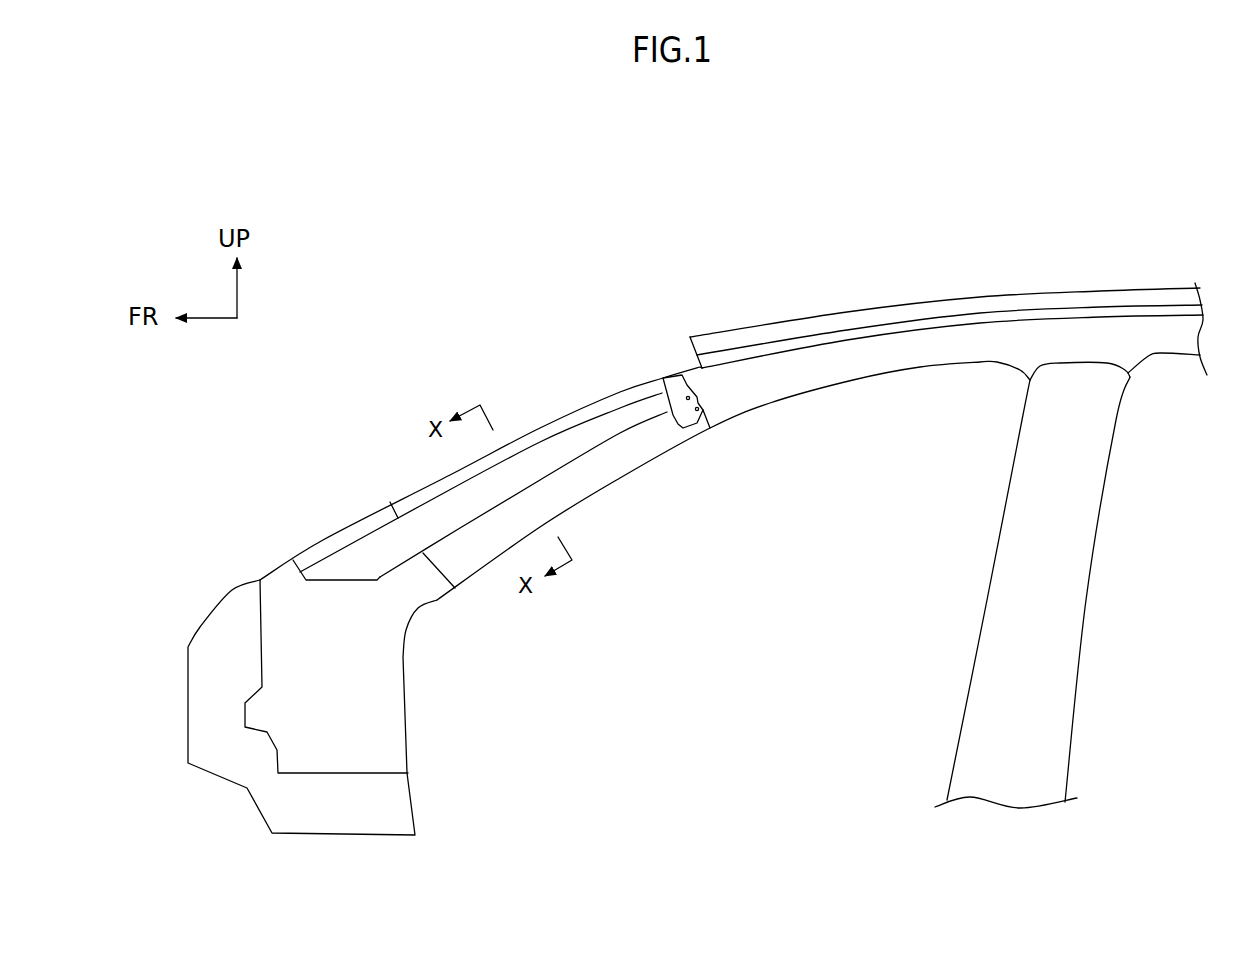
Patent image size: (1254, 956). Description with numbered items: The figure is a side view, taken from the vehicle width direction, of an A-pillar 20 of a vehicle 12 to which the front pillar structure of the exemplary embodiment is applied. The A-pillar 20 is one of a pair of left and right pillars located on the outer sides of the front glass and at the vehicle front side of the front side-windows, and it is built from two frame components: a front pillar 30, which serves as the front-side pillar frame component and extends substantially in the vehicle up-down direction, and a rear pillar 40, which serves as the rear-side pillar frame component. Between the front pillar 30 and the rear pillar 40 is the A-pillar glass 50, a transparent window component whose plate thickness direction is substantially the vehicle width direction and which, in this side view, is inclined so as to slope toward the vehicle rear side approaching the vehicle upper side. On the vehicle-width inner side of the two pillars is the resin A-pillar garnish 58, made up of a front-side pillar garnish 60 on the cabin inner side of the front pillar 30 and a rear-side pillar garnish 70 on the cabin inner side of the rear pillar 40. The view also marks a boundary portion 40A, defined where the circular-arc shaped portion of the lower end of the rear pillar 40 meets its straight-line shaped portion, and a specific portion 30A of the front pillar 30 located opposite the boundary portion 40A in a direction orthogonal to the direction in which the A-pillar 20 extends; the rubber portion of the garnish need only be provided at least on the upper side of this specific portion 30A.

The vehicle 12 is at (987, 286).
The front pillar (A-pillar) 20 is at (527, 413).
The front pillar 30 is at (560, 430).
The specific portion 30A is at (390, 502).
The rear pillar 40 is at (577, 495).
The boundary portion 40A is at (457, 597).
The A-pillar glass 50 is at (373, 555).
The A-pillar garnish 58 is at (586, 432).
The front-side pillar garnish 60 is at (623, 403).
The rear-side pillar garnish 70 is at (634, 465).